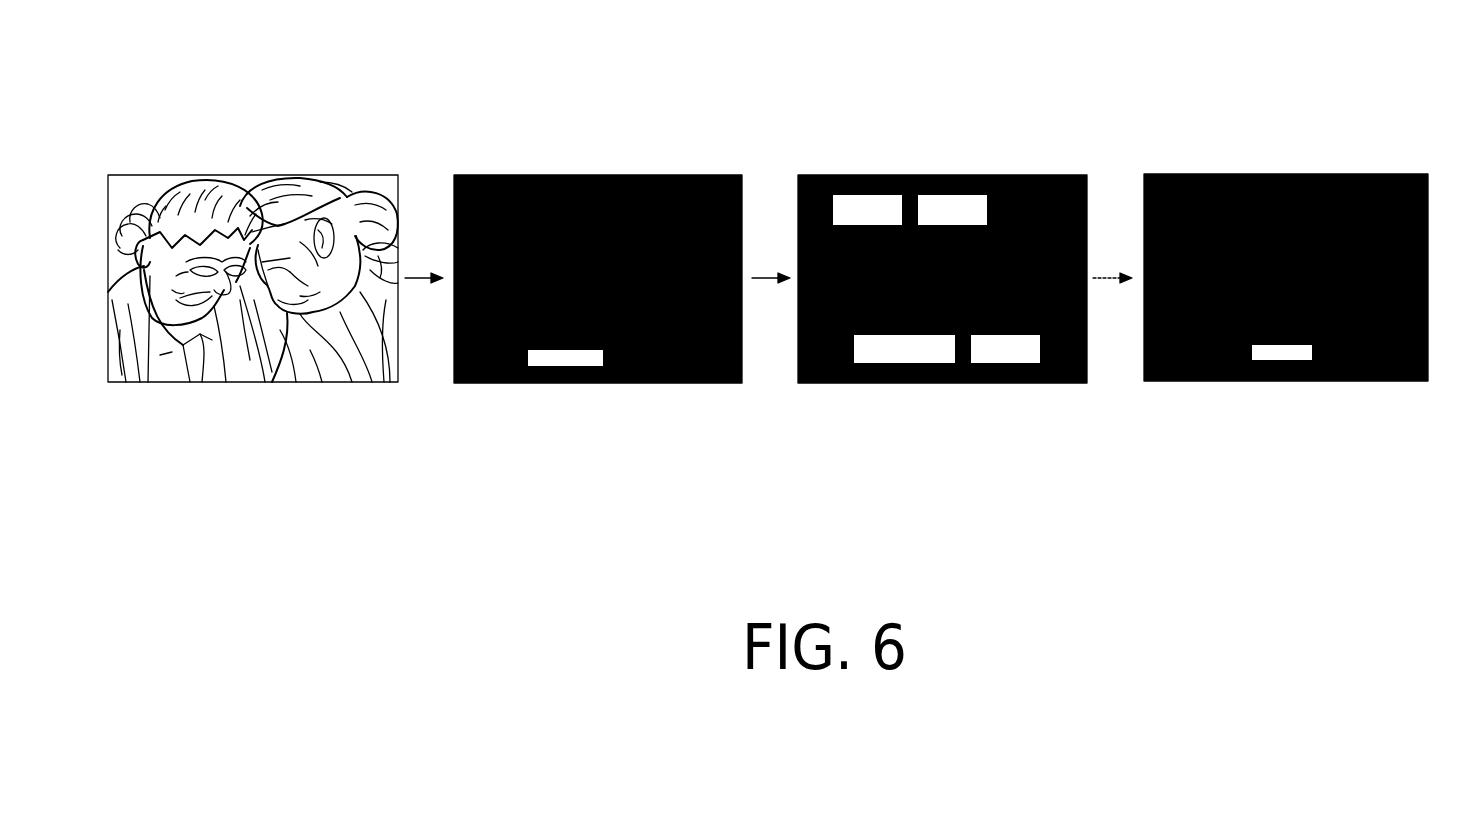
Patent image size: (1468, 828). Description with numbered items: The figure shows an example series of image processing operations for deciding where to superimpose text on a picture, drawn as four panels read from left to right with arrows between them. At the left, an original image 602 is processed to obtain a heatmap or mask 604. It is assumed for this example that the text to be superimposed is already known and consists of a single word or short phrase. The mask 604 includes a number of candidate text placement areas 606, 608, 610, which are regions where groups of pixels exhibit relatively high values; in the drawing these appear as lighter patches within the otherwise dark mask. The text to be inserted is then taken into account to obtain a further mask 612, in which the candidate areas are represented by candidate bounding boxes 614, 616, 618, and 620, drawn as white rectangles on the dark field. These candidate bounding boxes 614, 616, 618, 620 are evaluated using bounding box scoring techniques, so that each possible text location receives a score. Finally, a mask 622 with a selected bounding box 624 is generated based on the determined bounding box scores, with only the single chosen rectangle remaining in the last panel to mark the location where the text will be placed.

The original image 602 is at (253, 278).
The heatmap or mask 604 is at (662, 175).
The candidate text placement area 606 is at (533, 175).
The candidate text placement area 608 is at (624, 175).
The candidate text placement area 610 is at (590, 374).
The mask 612 is at (1028, 175).
The candidate bounding box 614 is at (848, 175).
The candidate bounding box 616 is at (957, 175).
The candidate bounding box 618 is at (913, 357).
The candidate bounding box 620 is at (1008, 365).
The mask 622 is at (1339, 174).
The selected bounding box 624 is at (1284, 354).